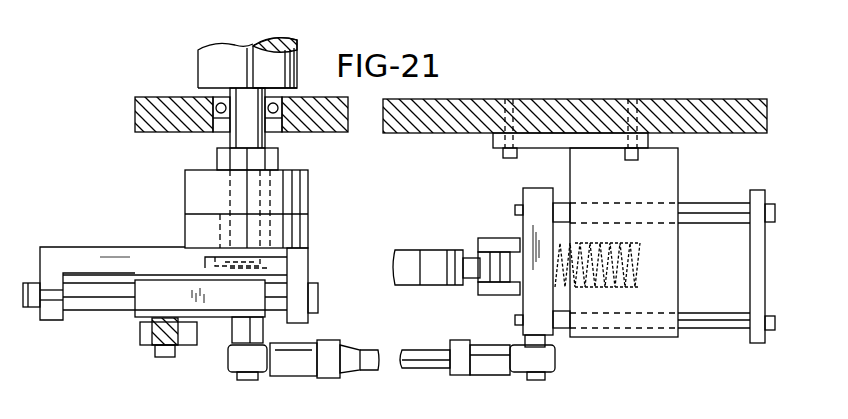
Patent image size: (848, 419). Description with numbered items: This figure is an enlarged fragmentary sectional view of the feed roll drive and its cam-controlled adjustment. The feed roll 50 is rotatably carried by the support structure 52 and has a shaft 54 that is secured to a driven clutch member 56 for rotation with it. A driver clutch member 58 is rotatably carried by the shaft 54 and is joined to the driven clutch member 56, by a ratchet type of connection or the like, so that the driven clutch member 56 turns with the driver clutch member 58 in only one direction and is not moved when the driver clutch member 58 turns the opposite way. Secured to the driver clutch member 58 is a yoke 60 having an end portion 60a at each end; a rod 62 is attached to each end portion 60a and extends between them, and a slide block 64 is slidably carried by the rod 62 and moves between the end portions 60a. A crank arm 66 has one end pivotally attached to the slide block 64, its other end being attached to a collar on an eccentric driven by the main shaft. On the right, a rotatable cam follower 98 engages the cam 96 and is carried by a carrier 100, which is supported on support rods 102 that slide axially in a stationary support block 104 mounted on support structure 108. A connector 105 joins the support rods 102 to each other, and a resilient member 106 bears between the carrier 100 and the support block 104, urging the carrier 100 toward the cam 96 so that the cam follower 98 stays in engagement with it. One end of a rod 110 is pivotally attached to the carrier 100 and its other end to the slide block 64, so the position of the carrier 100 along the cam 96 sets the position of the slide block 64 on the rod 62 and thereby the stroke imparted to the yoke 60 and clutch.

The feed roll 50 is at (226, 46).
The support structure 52 is at (134, 108).
The shaft 54 is at (264, 140).
The driven clutch member 56 is at (190, 172).
The driver clutch member 58 is at (303, 232).
The yoke 60 is at (88, 249).
The end portion 60a is at (54, 324).
The rod 62 is at (98, 306).
The slide block 64 is at (166, 284).
The crank arm 66 is at (147, 338).
The cam 96 is at (403, 252).
The cam follower 98 is at (472, 258).
The carrier 100 is at (523, 198).
The support rods 102 is at (562, 204).
The support block 104 is at (669, 339).
The connector 105 is at (757, 198).
The resilient member 106 is at (608, 243).
The support structure 108 is at (618, 105).
The rod 110 is at (382, 366).